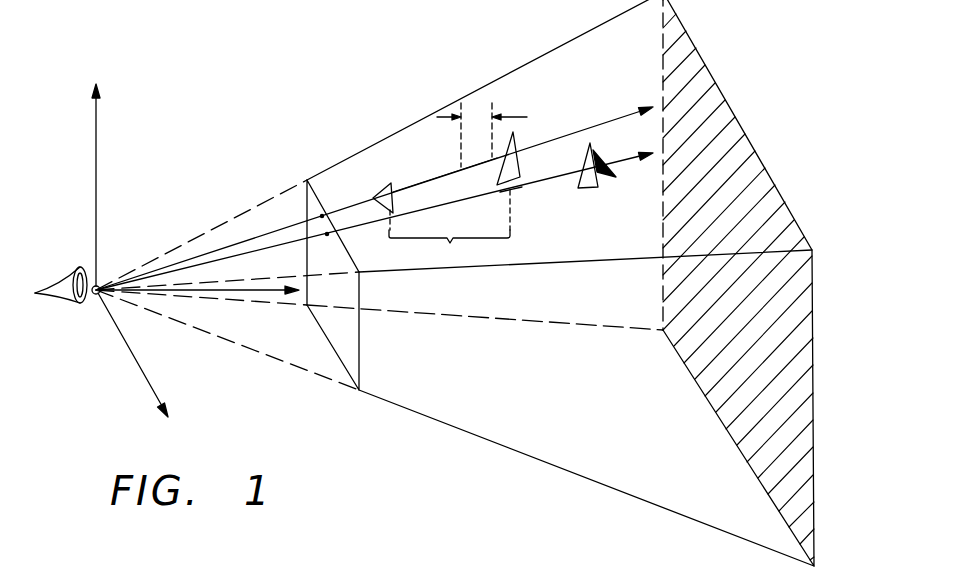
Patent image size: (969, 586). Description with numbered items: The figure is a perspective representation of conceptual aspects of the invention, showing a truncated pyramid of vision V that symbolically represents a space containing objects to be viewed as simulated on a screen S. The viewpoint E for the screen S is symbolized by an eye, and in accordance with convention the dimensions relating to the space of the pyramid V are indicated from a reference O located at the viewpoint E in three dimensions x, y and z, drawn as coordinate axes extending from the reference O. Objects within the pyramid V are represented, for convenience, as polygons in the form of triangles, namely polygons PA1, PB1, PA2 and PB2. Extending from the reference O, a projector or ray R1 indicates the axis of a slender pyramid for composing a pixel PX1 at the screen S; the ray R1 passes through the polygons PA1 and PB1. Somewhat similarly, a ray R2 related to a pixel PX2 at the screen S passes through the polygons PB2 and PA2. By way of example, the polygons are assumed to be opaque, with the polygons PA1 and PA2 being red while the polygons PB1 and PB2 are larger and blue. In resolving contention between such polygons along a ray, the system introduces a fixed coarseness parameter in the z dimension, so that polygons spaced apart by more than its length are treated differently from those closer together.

The reference O is at (90, 302).
The viewpoint E is at (60, 270).
The x dimension x is at (136, 363).
The y dimension y is at (95, 139).
The z dimension z is at (231, 291).
The screen S is at (337, 297).
The truncated pyramid of vision V is at (773, 181).
The pixel PX1 is at (316, 217).
The pixel PX2 is at (321, 235).
The ray R1 is at (422, 183).
The ray R2 is at (459, 202).
The polygon PA1 is at (400, 198).
The polygon PB1 is at (529, 158).
The polygon PA2 is at (612, 169).
The polygon PB2 is at (529, 196).